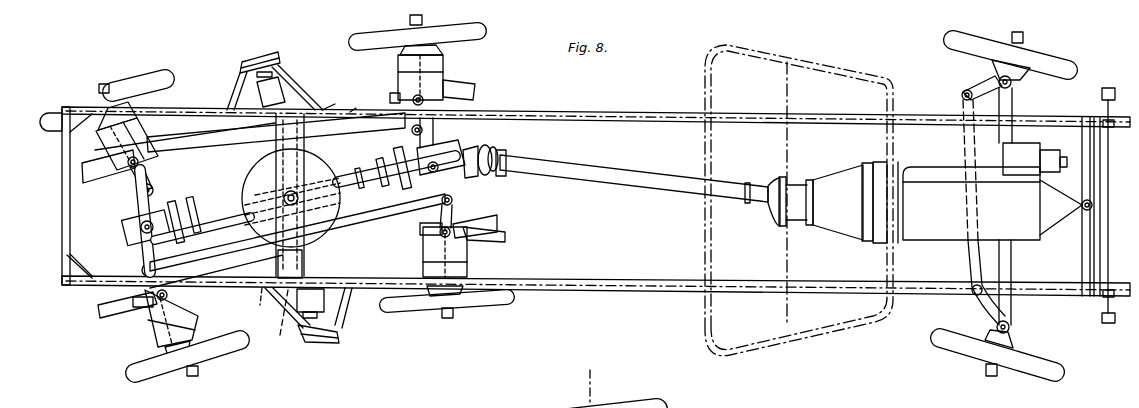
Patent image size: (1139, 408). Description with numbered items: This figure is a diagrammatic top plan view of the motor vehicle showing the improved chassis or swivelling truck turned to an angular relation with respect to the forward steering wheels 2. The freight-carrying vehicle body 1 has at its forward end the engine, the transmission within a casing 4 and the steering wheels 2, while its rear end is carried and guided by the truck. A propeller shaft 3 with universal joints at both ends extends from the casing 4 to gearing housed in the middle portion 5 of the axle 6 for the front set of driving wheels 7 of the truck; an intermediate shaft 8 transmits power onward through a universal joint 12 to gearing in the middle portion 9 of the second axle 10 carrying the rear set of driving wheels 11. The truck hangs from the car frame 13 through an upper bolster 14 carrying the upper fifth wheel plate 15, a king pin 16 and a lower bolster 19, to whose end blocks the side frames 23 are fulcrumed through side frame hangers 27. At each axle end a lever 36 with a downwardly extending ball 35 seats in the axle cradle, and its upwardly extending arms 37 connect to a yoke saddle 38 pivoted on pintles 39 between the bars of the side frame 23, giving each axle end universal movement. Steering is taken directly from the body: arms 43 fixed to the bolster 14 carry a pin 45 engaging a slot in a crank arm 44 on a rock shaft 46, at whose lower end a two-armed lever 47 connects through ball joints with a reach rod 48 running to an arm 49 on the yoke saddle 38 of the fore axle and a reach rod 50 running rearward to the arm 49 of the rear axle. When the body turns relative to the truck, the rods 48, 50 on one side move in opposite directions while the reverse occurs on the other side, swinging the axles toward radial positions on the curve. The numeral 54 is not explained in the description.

The motor vehicle body 1 is at (588, 113).
The steering wheels 2 is at (1080, 66).
The propeller shaft 3 is at (616, 172).
The casing 4 is at (930, 193).
The middle portion of the axle 5 is at (470, 148).
The axle 6 is at (440, 148).
The front set of driving wheels 7 is at (480, 38).
The intermediate shaft 8 is at (233, 202).
The middle portion of the second axle 9 is at (128, 240).
The second axle 10 is at (136, 212).
The rear set of driving wheels 11 is at (148, 76).
The universal joint 12 is at (202, 207).
The car frame 13 is at (63, 268).
The upper bolster 14 is at (274, 254).
The upper fifth wheel plate 15 is at (310, 160).
The king pin 16 is at (283, 212).
The lower bolster 19 is at (310, 303).
The side frame 23 is at (82, 175).
The side frame hanger 27 is at (300, 87).
The ball 35 is at (168, 108).
The lever 36 is at (104, 140).
The upwardly extending arms 37 is at (160, 135).
The yoke saddle 38 is at (138, 193).
The pintles 39 is at (150, 175).
The laterally extending arms 43 is at (355, 110).
The crank arm 44 is at (261, 306).
The pin 45 is at (400, 126).
The rock shaft 46 is at (272, 192).
The lever 47 is at (313, 216).
The reach rod 48 is at (398, 242).
The arm 49 is at (100, 300).
The reach rod 50 is at (207, 160).
The link 54 is at (330, 108).